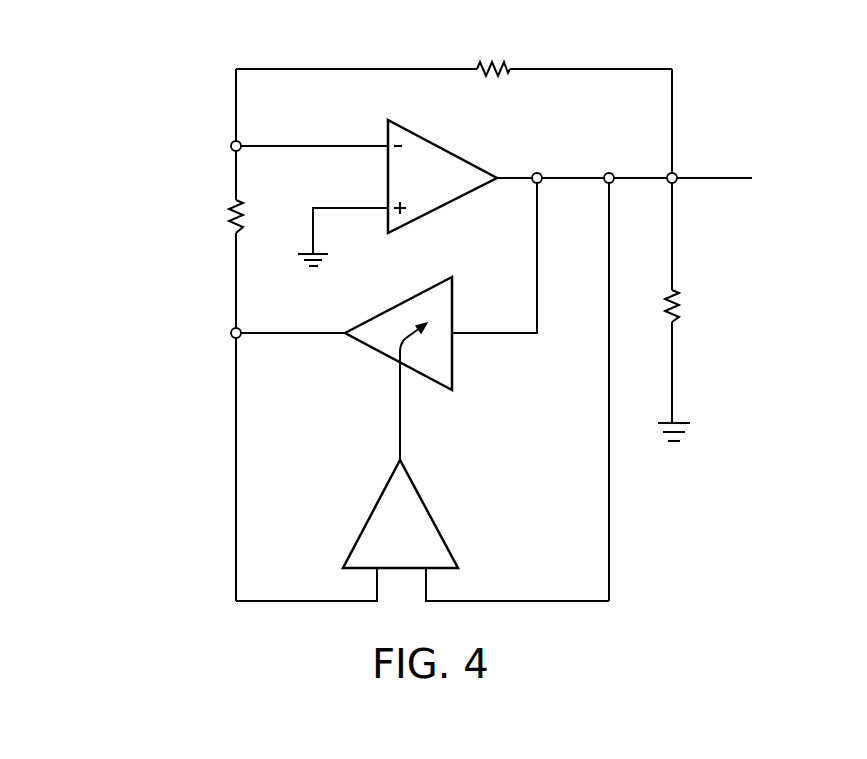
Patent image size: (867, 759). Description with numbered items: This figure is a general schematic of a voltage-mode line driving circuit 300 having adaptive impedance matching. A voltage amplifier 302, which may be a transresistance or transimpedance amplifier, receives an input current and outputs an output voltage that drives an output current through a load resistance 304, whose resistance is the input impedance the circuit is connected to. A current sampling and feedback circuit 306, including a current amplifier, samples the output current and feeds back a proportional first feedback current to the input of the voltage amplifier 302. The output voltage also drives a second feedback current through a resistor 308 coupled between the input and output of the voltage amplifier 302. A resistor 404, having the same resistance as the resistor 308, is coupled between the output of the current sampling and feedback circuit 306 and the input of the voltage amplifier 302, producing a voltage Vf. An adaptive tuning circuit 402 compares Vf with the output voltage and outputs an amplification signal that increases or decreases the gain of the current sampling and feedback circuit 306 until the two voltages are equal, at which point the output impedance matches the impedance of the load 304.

The voltage-mode line driving circuit 300 is at (123, 97).
The voltage amplifier 302 is at (448, 150).
The load resistance 304 is at (683, 303).
The current sampling and feedback circuit 306 is at (416, 295).
The resistor 308 is at (500, 63).
The adaptive tuning circuit 402 is at (425, 503).
The resistor 404 is at (231, 214).